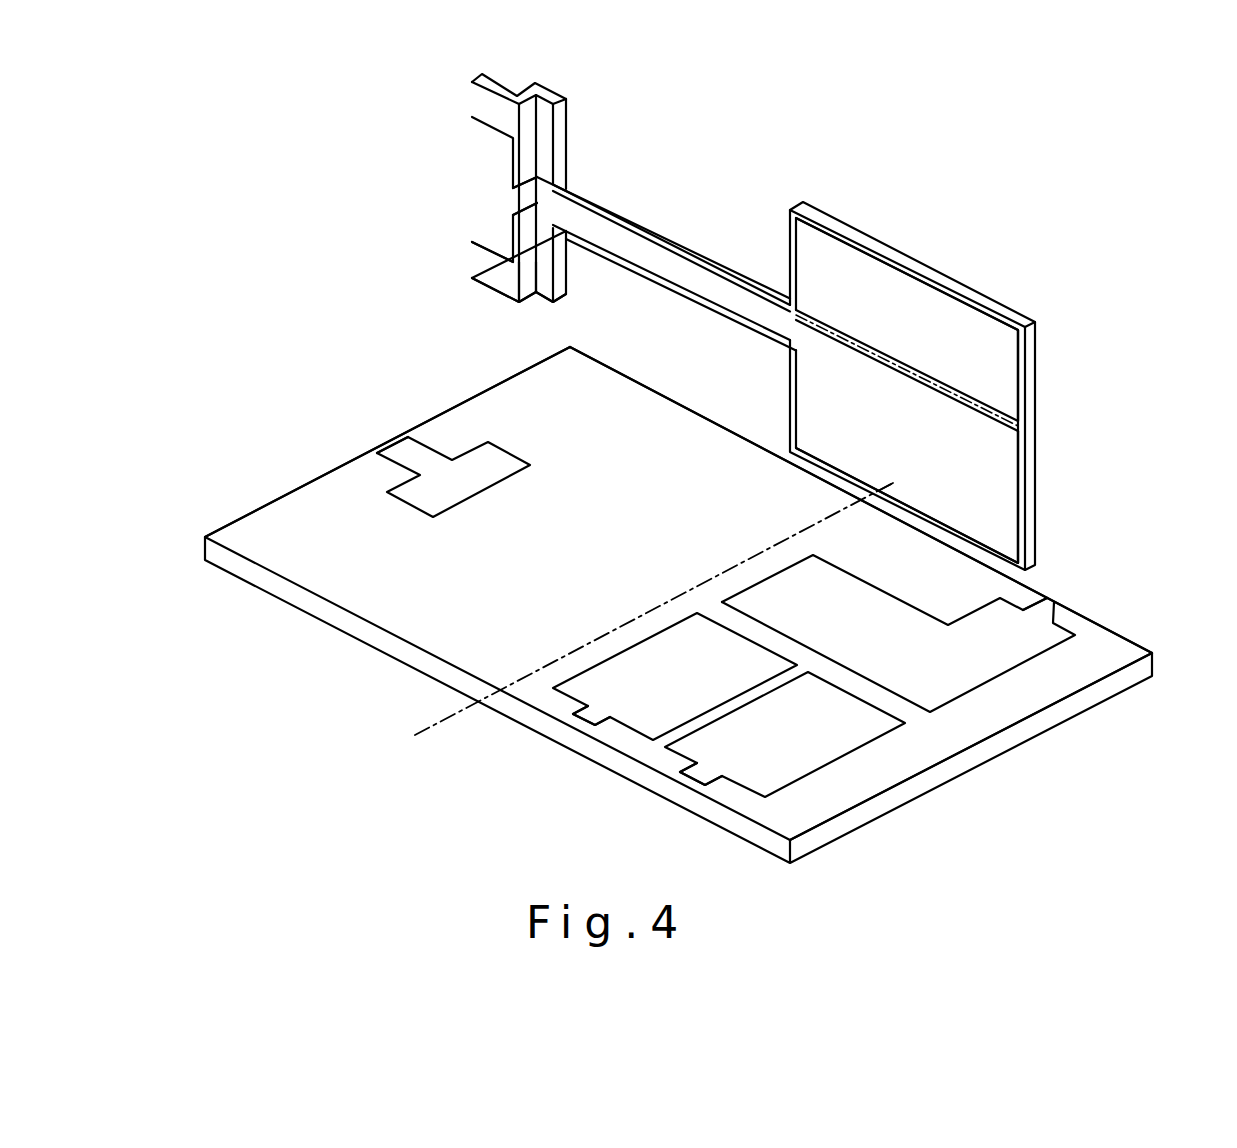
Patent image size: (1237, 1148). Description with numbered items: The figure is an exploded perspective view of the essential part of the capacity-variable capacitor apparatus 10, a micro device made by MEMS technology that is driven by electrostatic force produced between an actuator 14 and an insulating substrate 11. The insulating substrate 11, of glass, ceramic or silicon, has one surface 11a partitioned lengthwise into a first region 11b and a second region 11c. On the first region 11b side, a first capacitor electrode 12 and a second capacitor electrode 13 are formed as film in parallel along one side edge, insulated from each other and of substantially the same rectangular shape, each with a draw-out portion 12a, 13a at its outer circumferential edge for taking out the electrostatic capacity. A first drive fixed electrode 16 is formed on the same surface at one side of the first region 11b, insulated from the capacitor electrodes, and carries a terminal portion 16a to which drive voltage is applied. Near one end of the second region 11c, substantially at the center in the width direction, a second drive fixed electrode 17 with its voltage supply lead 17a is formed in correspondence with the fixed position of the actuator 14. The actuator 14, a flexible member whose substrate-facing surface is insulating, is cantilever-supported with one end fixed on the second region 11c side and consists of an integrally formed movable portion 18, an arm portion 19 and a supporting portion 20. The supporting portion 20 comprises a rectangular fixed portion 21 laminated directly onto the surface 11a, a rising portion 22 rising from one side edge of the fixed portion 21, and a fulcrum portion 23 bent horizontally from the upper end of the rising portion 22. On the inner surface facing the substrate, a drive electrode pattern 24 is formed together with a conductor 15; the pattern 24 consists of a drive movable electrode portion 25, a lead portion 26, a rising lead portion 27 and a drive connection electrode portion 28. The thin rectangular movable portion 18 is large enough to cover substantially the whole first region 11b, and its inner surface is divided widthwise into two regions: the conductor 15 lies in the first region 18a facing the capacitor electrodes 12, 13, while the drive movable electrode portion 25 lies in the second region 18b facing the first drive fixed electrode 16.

The capacitor apparatus 10 is at (281, 306).
The insulating substrate 11 is at (697, 589).
The one surface 11a is at (469, 413).
The first region 11b is at (1090, 648).
The second region 11c is at (645, 406).
The first capacitor electrode 12 is at (785, 764).
The draw-out portion 12a is at (696, 781).
The second capacitor electrode 13 is at (643, 719).
The draw-out portion 13a is at (550, 749).
The actuator 14 is at (485, 193).
The conductor 15 is at (997, 362).
The first drive fixed electrode 16 is at (925, 675).
The terminal portion 16a is at (1050, 608).
The second drive fixed electrode 17 is at (405, 480).
The voltage supply lead 17a is at (402, 455).
The movable portion 18 is at (921, 375).
The first region 18a is at (1022, 410).
The second region 18b is at (1022, 466).
The arm portion 19 is at (612, 262).
The supporting portion 20 is at (393, 222).
The fixed portion 21 is at (480, 255).
The rising portion 22 is at (525, 268).
The fulcrum portion 23 is at (547, 275).
The drive electrode pattern 24 is at (822, 388).
The drive movable electrode portion 25 is at (998, 514).
The lead portion 26 is at (651, 224).
The rising lead portion 27 is at (524, 200).
The connection electrode portion 28 is at (491, 175).